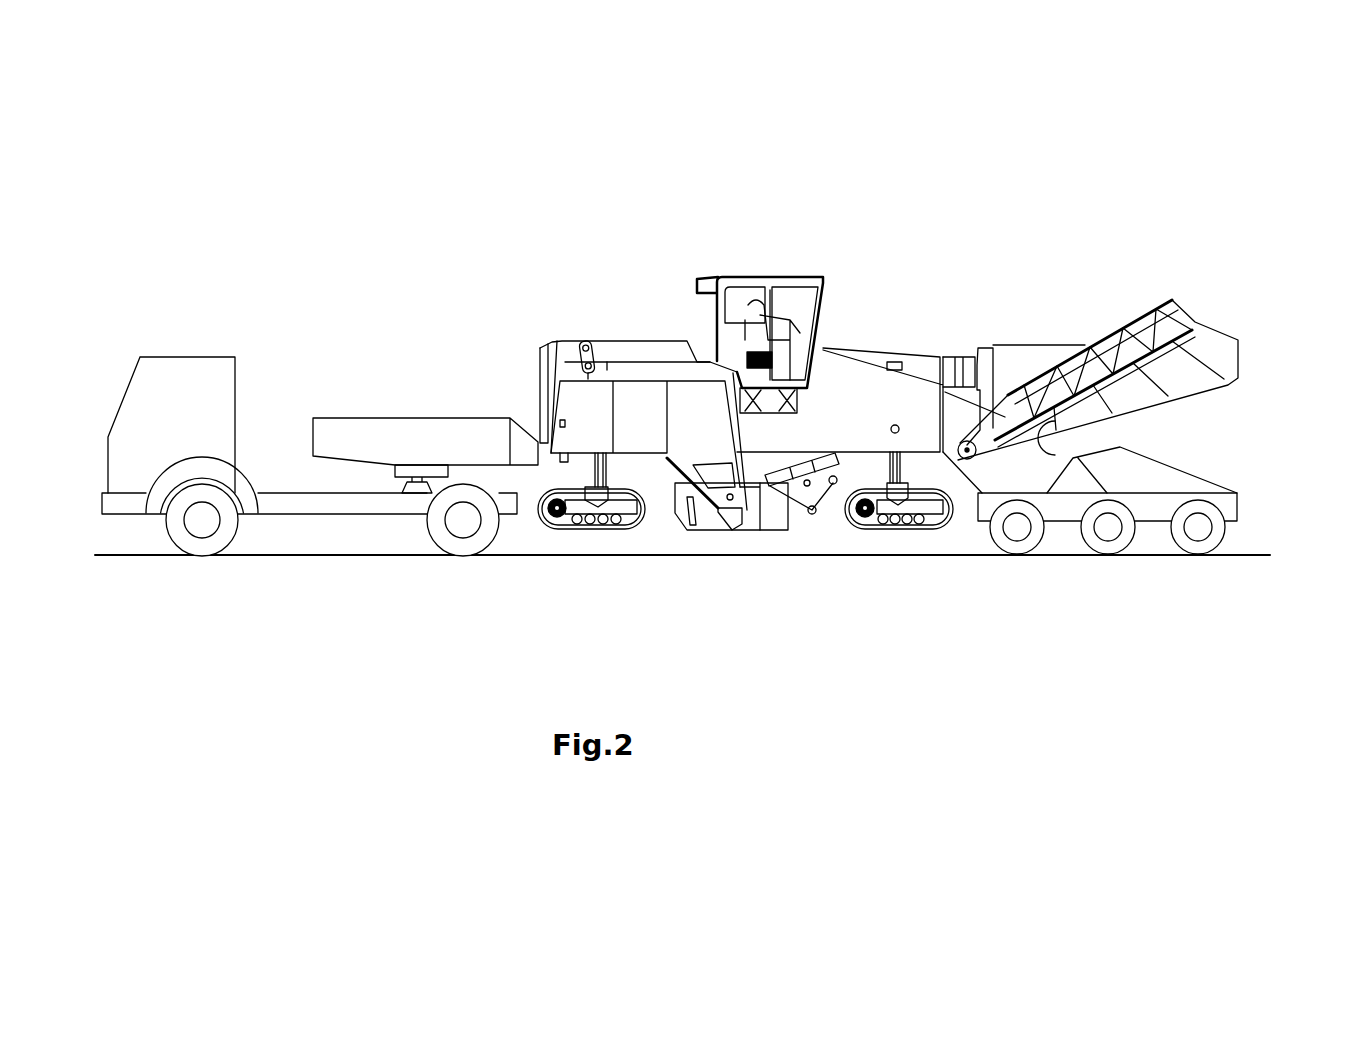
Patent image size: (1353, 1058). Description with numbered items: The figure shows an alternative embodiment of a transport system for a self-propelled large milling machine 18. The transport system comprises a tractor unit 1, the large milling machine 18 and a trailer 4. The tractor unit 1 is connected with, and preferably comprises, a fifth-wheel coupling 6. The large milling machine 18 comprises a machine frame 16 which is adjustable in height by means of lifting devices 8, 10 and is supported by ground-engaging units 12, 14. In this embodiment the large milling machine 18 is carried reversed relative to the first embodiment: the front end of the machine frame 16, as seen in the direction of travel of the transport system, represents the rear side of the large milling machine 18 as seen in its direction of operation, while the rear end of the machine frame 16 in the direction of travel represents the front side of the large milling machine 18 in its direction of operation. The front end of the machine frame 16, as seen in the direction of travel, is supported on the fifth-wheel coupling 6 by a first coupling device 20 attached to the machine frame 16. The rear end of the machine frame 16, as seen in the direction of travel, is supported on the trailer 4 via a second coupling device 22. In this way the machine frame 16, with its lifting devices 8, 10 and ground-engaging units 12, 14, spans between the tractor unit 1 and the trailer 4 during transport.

The tractor unit 1 is at (148, 332).
The trailer 4 is at (1248, 507).
The fifth-wheel coupling 6 is at (412, 487).
The lifting device 8 is at (890, 470).
The lifting device 10 is at (598, 473).
The ground-engaging unit 12 is at (905, 523).
The ground-engaging unit 14 is at (595, 527).
The machine frame 16 is at (620, 327).
The large milling machine 18 is at (890, 273).
The first coupling device 20 is at (412, 398).
The second coupling device 22 is at (1158, 466).